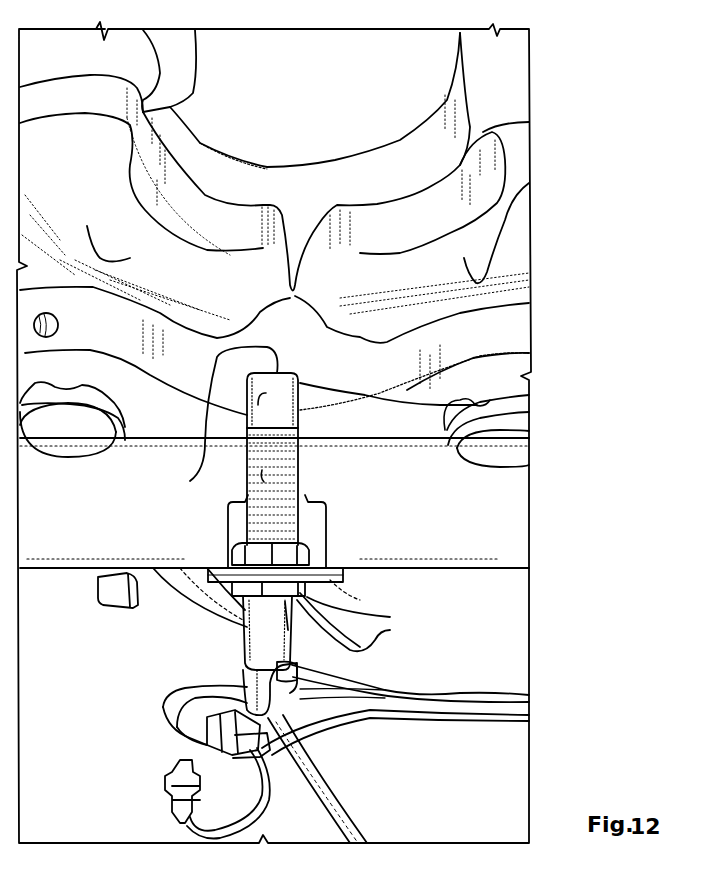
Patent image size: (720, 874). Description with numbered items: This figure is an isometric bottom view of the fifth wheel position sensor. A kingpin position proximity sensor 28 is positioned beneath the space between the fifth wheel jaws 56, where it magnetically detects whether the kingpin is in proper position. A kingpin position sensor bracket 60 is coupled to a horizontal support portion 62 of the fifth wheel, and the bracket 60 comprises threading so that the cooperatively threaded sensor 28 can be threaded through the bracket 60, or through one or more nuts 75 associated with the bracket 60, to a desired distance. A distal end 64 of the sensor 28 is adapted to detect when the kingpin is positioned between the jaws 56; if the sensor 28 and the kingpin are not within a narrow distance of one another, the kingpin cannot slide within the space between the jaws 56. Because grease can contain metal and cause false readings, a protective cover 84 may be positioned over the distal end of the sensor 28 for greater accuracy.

The fifth wheel jaws 56 is at (120, 262).
The protective cover 84 is at (527, 393).
The distal end 64 is at (203, 437).
The kingpin position proximity sensor 28 is at (260, 463).
The kingpin position sensor bracket 60 is at (360, 573).
The nuts 75 is at (360, 650).
The horizontal support portion 62 is at (45, 570).